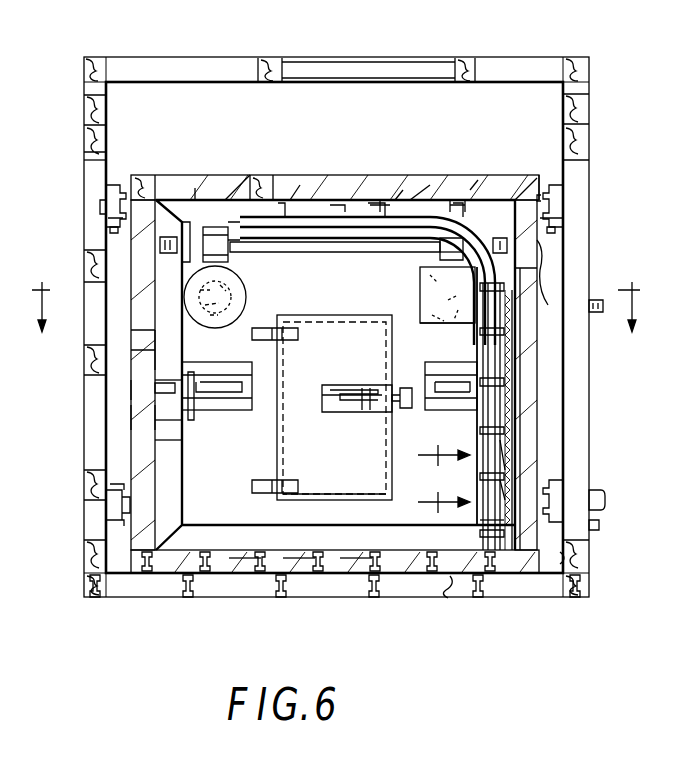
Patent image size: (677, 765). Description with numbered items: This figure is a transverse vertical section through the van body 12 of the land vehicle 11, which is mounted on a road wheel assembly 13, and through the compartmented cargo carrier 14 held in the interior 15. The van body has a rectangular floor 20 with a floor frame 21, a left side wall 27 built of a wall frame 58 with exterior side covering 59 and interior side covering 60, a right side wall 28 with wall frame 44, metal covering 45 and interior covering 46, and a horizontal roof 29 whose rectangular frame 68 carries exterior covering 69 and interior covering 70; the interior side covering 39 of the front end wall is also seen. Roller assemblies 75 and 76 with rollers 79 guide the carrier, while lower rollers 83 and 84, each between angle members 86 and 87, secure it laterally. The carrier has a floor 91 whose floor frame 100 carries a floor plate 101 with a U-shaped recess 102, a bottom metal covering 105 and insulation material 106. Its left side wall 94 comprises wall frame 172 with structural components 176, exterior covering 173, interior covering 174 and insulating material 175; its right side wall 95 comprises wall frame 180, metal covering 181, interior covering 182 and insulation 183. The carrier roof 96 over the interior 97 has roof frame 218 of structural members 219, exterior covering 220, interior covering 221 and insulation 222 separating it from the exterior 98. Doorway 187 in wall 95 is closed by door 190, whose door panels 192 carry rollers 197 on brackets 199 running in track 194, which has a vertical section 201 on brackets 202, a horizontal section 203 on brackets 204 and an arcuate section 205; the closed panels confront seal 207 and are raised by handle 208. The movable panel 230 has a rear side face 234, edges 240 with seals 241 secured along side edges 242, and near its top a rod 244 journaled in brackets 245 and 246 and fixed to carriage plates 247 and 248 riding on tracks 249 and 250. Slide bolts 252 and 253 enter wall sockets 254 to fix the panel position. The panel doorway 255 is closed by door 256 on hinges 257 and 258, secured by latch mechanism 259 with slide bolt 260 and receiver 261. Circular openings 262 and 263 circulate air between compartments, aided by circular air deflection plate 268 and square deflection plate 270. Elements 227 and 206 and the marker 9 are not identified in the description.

The land vehicle 11 is at (589, 100).
The van body 12 is at (428, 82).
The interior 15 is at (123, 82).
The rectangular frame 68 is at (258, 70).
The exterior covering 69 is at (290, 68).
The interior side covering 39 is at (355, 72).
The horizontal roof 29 is at (480, 74).
The metal covering 45 is at (590, 120).
The right side wall 28 is at (580, 162).
The exterior side covering 59 is at (90, 102).
The wall frame 58 is at (94, 130).
The left side wall 27 is at (100, 158).
The left side wall 94 is at (100, 300).
The angle member 86 is at (100, 466).
The angle member 87 is at (92, 540).
The rectangular floor 20 is at (90, 572).
The door panels 192 is at (575, 545).
The elongated seal 207 is at (580, 560).
The metal covering 105 is at (168, 582).
The insulation material 106 is at (380, 582).
The floor frame 21 is at (452, 590).
The handle 208 is at (525, 574).
The wall frame 44 is at (556, 570).
The interior side covering 60 is at (110, 108).
The interior covering 221 is at (150, 190).
The interior covering 182 is at (505, 188).
The floor 91 is at (165, 560).
The floor frame 100 is at (280, 556).
The U-shaped recess 102 is at (327, 558).
The floor plate 101 is at (376, 560).
The cargo carrier 14 is at (540, 195).
The interior covering 70 is at (545, 86).
The covering 46 is at (560, 122).
The roller assembly 75 is at (104, 195).
The rollers 79 is at (104, 225).
The track 249 is at (158, 245).
The wall frame 172 is at (178, 250).
The rear side face 234 is at (129, 340).
The covering 173 is at (153, 350).
The edges 240 is at (130, 388).
The panel section 227 is at (129, 418).
The roller 83 is at (104, 505).
The roller assembly 76 is at (565, 200).
The carriage plate 248 is at (566, 235).
The insulation 183 is at (555, 258).
The wall frame 180 is at (548, 300).
The metal covering 181 is at (560, 318).
The roller 84 is at (598, 510).
The track 194 is at (322, 242).
The elongated rod 244 is at (414, 252).
The bracket 246 is at (445, 262).
The air deflection plate 270 is at (437, 284).
The circular opening 263 is at (420, 316).
The track 250 is at (470, 292).
The arcuate section 205 is at (495, 236).
The exterior covering 220 is at (460, 185).
The structural members 219 is at (425, 178).
The roof 96 is at (425, 186).
The exterior 98 is at (460, 193).
The horizontal section 203 is at (358, 192).
The brackets 204 is at (390, 187).
The insulation 222 is at (305, 182).
The interior 97 is at (338, 191).
The elongated seals 241 is at (278, 187).
The roof frame 218 is at (245, 182).
The panel 230 is at (190, 187).
The carriage plate 247 is at (210, 230).
The side edge 242 is at (232, 250).
The bracket 245 is at (242, 268).
The circular opening 262 is at (248, 303).
The circular air deflection plate 268 is at (205, 326).
The rectangular doorway 255 is at (393, 348).
The hinge 257 is at (290, 341).
The hinge 258 is at (290, 483).
The rectangular door 256 is at (284, 503).
The latch mechanism 259 is at (335, 385).
The slide bolt 260 is at (395, 388).
The receiver 261 is at (360, 413).
The slide bolt 252 is at (186, 361).
The wall sockets 254 is at (190, 419).
The insulating material 175 is at (165, 402).
The covering 174 is at (165, 432).
The structural components 176 is at (165, 454).
The slide bolt 253 is at (455, 411).
The right side wall 95 is at (500, 395).
The vertical section 201 is at (505, 390).
The brackets 202 is at (503, 345).
The doorway 187 is at (510, 430).
The roller 197 is at (520, 450).
The bracket 199 is at (503, 470).
The door 190 is at (503, 500).
The rack bottom 206 is at (480, 530).
The road wheel assembly 13 is at (442, 472).
The section line 9 is at (335, 299).